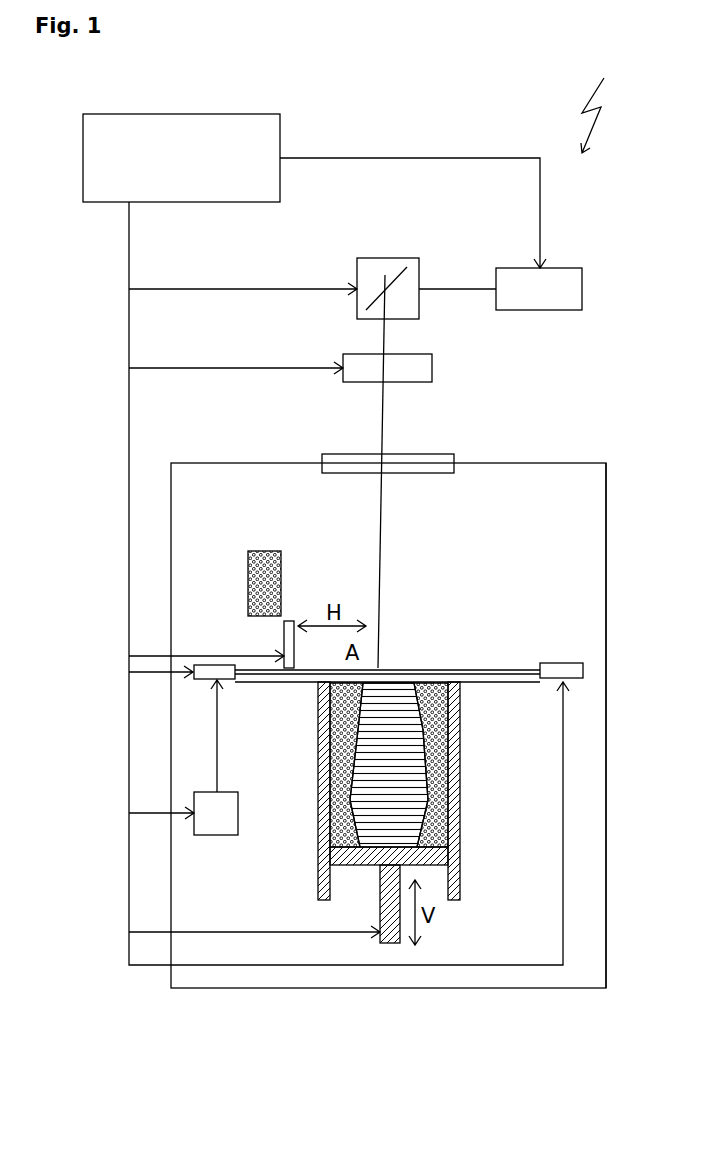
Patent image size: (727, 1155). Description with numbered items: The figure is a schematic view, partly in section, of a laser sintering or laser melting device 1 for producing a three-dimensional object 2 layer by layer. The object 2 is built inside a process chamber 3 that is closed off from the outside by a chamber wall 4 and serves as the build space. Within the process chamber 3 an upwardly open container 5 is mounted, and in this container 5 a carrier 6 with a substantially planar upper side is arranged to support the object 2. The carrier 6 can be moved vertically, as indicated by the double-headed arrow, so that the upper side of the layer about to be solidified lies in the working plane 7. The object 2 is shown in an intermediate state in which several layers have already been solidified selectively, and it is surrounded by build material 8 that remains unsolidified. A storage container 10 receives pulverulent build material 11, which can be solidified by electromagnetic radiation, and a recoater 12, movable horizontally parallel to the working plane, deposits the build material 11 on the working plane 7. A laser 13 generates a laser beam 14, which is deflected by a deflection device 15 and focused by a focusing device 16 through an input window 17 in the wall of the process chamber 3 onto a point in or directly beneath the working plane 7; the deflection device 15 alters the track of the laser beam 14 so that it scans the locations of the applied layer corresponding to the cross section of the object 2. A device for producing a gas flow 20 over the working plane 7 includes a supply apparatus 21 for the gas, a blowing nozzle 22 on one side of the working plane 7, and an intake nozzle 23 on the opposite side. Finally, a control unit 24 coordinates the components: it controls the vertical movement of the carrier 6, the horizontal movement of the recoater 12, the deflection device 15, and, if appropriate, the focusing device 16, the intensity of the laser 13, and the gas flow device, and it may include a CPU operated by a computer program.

The laser sintering or laser melting device 1 is at (596, 107).
The object 2 is at (400, 745).
The process chamber 3 is at (557, 552).
The chamber wall 4 is at (606, 725).
The container 5 is at (445, 782).
The carrier 6 is at (372, 865).
The working plane 7 is at (442, 688).
The build material 8 is at (460, 698).
The storage container 10 is at (232, 577).
The build material 11 is at (252, 592).
The recoater 12 is at (285, 630).
The laser 13 is at (522, 292).
The laser beam 14 is at (447, 289).
The deflection device 15 is at (379, 270).
The focusing device 16 is at (410, 364).
The input window 17 is at (360, 464).
The gas flow 20 is at (392, 683).
The supply apparatus 21 is at (227, 813).
The blowing nozzle 22 is at (235, 673).
The intake nozzle 23 is at (571, 668).
The control unit 24 is at (170, 168).